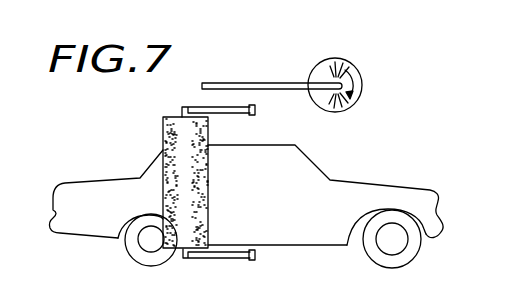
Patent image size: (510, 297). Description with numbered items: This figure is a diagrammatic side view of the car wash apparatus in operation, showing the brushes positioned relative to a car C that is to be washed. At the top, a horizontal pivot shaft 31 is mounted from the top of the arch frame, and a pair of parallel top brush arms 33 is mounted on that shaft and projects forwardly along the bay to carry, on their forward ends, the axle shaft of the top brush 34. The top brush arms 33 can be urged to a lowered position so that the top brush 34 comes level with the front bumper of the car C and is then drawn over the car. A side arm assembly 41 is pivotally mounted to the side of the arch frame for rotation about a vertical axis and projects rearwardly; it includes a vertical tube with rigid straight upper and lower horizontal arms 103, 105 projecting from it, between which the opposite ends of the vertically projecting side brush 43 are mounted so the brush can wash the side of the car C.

The car C is at (277, 146).
The horizontal pivot shaft 31 is at (222, 84).
The top brush arms 33 is at (268, 82).
The top brush 34 is at (358, 75).
The side arm assembly 41 is at (188, 99).
The side brush 43 is at (163, 132).
The upper horizontal arm 103 is at (223, 113).
The lower horizontal arm 105 is at (211, 258).